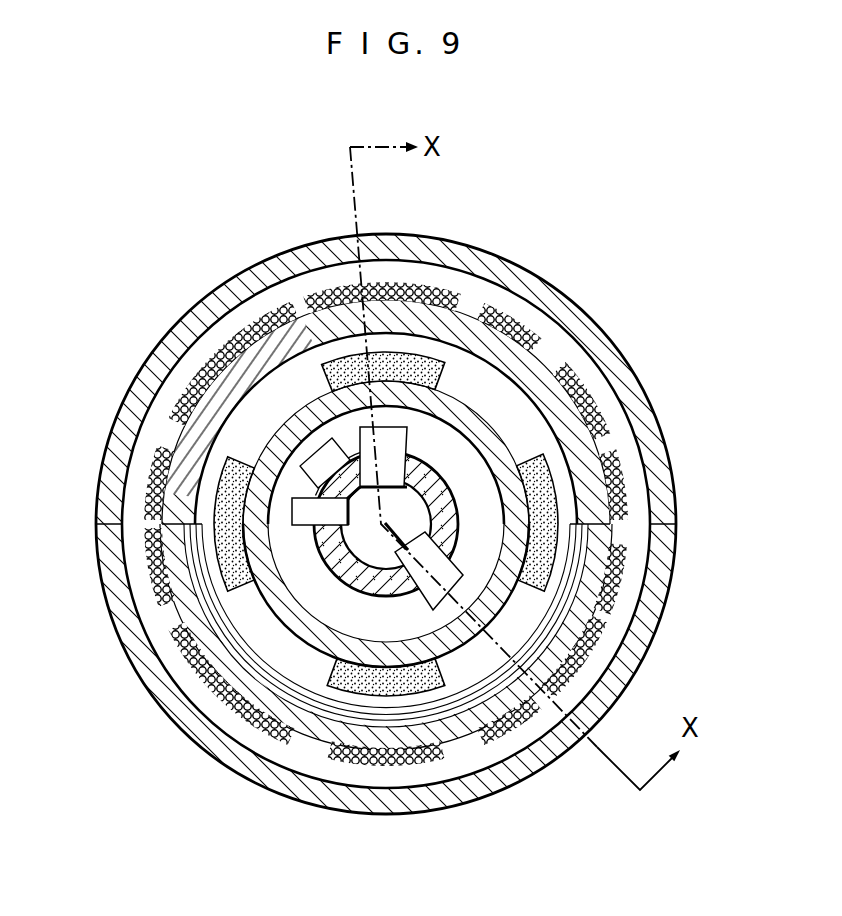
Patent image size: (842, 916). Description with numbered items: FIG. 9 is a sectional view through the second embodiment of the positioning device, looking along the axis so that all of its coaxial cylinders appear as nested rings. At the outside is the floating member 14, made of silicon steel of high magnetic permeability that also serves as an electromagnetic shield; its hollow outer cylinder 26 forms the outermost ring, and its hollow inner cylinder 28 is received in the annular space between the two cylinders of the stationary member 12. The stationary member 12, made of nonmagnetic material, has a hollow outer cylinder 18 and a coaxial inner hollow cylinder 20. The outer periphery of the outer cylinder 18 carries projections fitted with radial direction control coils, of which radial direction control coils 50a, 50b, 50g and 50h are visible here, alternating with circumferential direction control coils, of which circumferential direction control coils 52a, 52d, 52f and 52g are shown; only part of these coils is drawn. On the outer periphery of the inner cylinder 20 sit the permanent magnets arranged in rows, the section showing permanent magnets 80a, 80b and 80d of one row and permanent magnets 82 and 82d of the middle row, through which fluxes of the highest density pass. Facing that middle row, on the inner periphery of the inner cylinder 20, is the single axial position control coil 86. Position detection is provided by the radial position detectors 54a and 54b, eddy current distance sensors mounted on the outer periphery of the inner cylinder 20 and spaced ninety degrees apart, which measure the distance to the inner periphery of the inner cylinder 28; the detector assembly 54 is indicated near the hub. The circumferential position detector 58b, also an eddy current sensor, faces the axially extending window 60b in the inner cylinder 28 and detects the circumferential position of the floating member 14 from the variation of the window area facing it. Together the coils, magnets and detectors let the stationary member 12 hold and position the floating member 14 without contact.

The stationary member 12 is at (603, 360).
The floating member 14 is at (552, 300).
The hollow outer cylinder 18 is at (277, 337).
The inner hollow cylinder 20 is at (386, 524).
The hollow outer cylinder 26 is at (630, 402).
The hollow inner cylinder 28 is at (493, 458).
The radial direction control coil 50a is at (325, 282).
The radial direction control coil 50b is at (620, 477).
The radial direction control coil 50g is at (432, 762).
The radial direction control coil 50h is at (152, 578).
The circumferential direction control coil 52a is at (458, 290).
The circumferential direction control coil 52d is at (187, 383).
The circumferential direction control coil 52f is at (570, 698).
The circumferential direction control coil 52g is at (263, 727).
The hub key block 54 is at (300, 458).
The radial position detector 54a is at (407, 440).
The radial position detector 54b is at (296, 527).
The circumferential position detector 58b is at (427, 607).
The axially extending window 60b is at (575, 700).
The permanent magnet 80a is at (448, 379).
The permanent magnet 80b is at (518, 458).
The permanent magnet 80d is at (220, 460).
The permanent magnet 82 is at (447, 676).
The permanent magnet 82d is at (237, 582).
The axial position control coil 86 is at (293, 692).